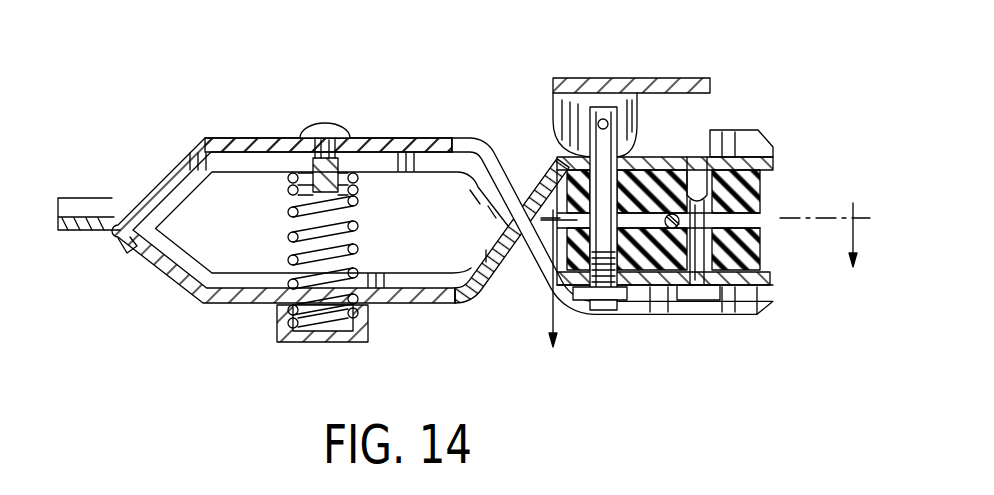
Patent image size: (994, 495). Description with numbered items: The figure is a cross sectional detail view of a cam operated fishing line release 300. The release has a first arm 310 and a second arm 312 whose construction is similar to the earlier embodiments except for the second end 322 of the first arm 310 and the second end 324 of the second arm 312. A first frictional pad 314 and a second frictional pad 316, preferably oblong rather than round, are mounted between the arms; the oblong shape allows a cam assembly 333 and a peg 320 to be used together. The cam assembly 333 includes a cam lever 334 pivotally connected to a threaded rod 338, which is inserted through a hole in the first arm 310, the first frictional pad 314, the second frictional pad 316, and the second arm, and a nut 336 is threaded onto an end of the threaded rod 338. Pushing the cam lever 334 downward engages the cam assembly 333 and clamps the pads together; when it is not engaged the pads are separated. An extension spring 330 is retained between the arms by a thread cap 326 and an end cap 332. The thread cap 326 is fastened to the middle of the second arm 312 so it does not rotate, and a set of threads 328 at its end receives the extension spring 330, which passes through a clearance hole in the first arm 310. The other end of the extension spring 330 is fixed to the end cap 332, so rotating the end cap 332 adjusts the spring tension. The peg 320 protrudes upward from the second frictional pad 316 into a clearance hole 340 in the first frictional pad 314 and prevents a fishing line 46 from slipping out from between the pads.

The cam operated fishing line release 300 is at (138, 287).
The first arm 310 is at (197, 303).
The second arm 312 is at (252, 138).
The first frictional pad 314 is at (762, 198).
The second frictional pad 316 is at (760, 250).
The peg 320 is at (725, 300).
The second end of the first arm 322 is at (762, 148).
The second end of the second arm 324 is at (770, 305).
The thread cap 326 is at (335, 122).
The set of threads 328 is at (347, 147).
The extension spring 330 is at (353, 233).
The end cap 332 is at (318, 343).
The cam assembly 333 is at (603, 78).
The cam lever 334 is at (657, 90).
The nut 336 is at (625, 305).
The threaded rod 338 is at (603, 310).
The clearance hole 340 is at (730, 128).
The fishing line 46 is at (662, 205).